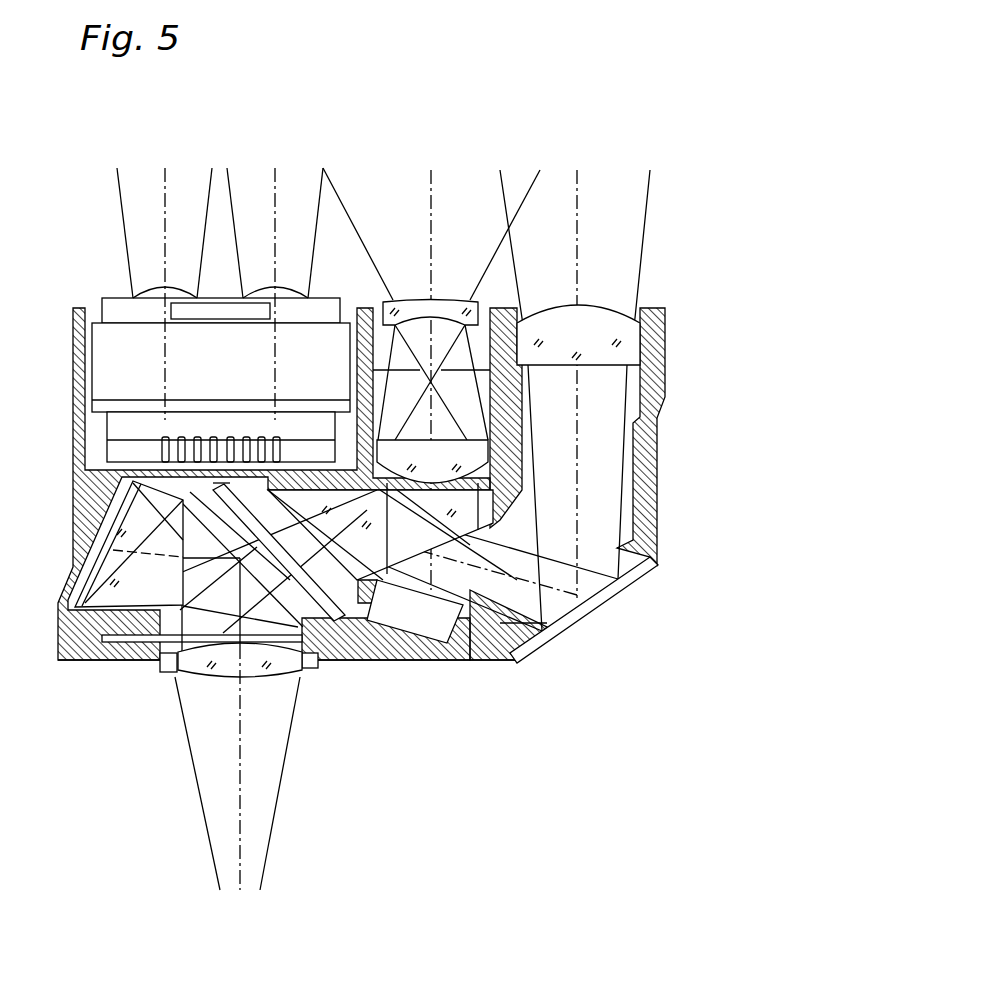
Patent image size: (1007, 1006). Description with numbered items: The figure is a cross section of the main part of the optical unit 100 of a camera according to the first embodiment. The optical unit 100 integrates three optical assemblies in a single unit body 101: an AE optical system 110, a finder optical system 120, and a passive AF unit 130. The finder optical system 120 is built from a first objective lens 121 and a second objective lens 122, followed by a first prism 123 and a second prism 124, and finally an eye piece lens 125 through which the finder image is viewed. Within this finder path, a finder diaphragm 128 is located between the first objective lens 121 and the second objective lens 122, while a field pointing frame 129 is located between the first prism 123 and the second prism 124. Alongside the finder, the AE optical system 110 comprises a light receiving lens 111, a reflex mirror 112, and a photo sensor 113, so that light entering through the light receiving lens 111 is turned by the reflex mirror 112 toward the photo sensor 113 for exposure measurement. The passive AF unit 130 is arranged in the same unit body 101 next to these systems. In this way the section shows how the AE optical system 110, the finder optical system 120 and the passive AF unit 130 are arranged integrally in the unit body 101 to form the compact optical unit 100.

The optical unit 100 is at (767, 331).
The unit body 101 is at (72, 492).
The AE optical system 110 is at (591, 421).
The light receiving lens 111 is at (605, 353).
The reflex mirror 112 is at (626, 610).
The photo sensor 113 is at (457, 663).
The finder optical system 120 is at (431, 347).
The first objective lens 121 is at (446, 440).
The second objective lens 122 is at (380, 580).
The first prism 123 is at (376, 645).
The second prism 124 is at (158, 620).
The eye piece lens 125 is at (215, 667).
The finder diaphragm 128 is at (393, 298).
The field pointing frame 129 is at (352, 560).
The passive AF unit 130 is at (125, 355).